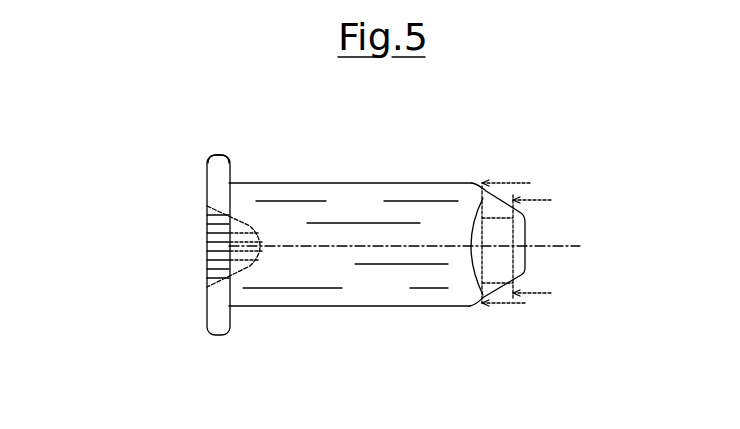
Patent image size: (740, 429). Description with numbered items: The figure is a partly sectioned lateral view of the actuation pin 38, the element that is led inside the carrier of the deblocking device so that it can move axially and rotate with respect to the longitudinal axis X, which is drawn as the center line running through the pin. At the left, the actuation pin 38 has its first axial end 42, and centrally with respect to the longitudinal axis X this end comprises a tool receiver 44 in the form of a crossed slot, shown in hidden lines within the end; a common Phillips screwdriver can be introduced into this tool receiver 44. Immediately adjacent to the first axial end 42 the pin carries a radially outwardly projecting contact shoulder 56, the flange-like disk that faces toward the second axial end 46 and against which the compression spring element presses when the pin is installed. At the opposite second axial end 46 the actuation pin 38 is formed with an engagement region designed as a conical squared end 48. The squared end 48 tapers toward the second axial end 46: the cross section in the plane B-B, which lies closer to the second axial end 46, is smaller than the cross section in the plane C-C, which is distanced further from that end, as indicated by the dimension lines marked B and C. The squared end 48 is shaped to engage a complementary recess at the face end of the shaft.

The actuation pin 38 is at (343, 200).
The first axial end 42 is at (207, 300).
The tool receiver 44 is at (205, 257).
The second axial end 46 is at (525, 270).
The squared end 48 is at (492, 263).
The contact shoulder 56 is at (230, 157).
The longitudinal axis X is at (540, 247).
The plane B- B is at (533, 252).
The plane C- C is at (506, 248).